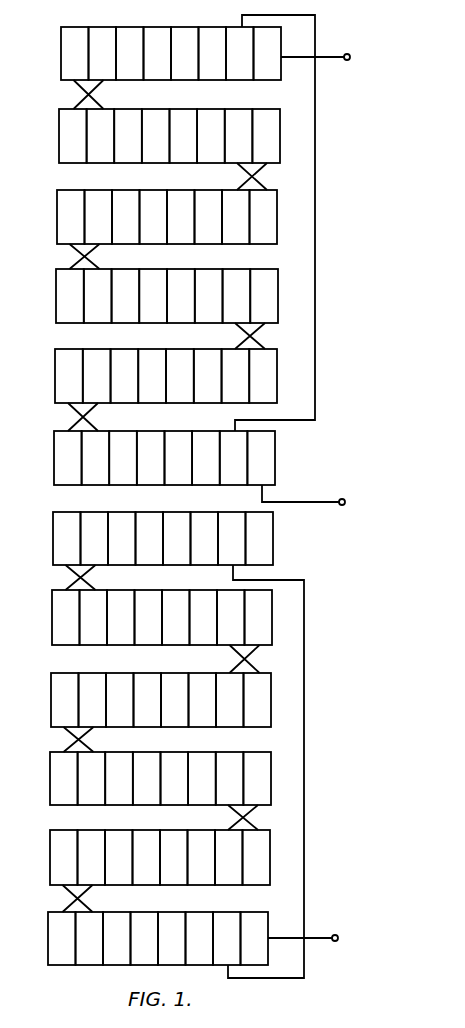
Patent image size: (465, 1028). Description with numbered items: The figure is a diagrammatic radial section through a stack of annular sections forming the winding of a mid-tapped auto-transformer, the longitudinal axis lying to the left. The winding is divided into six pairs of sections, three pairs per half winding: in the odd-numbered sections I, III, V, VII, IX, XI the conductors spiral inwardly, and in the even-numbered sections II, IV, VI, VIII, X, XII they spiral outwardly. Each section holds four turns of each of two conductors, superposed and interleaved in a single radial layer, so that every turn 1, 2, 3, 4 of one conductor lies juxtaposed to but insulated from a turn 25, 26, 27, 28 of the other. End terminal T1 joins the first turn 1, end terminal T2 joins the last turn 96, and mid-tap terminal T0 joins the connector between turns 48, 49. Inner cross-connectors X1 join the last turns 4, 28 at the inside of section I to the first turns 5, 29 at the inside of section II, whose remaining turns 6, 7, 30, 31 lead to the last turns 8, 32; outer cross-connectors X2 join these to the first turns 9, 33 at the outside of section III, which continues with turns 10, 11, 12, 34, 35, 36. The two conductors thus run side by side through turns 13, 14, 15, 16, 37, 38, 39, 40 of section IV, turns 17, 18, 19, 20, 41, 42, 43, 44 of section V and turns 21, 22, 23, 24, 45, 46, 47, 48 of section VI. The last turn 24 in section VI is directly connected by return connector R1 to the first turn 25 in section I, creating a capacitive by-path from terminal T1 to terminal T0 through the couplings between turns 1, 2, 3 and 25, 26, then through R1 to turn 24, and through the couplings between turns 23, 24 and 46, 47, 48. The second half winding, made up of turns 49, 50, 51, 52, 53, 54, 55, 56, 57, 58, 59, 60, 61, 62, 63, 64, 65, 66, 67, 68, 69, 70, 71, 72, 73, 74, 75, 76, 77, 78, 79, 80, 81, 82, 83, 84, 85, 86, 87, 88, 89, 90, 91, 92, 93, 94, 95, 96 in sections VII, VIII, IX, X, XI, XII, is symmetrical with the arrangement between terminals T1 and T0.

The first section I is at (160, 53).
The second section II is at (155, 136).
The first section of the second pair of sections III is at (151, 217).
The even-numbered section IV is at (150, 296).
The odd-numbered section V is at (154, 376).
The second section of the last pair of sections VI is at (150, 458).
The annular section VII is at (163, 538).
The annular section VIII is at (162, 617).
The annular section IX is at (161, 700).
The annular section X is at (146, 778).
The annular section XI is at (141, 857).
The annular section XII is at (138, 938).
The inner cross-connectors X1 is at (78, 87).
The outer cross-connectors X2 is at (260, 185).
The return connector R1 is at (312, 237).
The end terminal T1 is at (329, 58).
The mid-tap terminal T0 is at (315, 504).
The end terminal T2 is at (316, 939).
The first turn 1 is at (268, 53).
The turn 2 is at (213, 53).
The turn 3 is at (158, 53).
The last turn 4 is at (103, 53).
The first turn 5 is at (73, 136).
The turn 6 is at (128, 136).
The turn 7 is at (184, 136).
The last turn 8 is at (239, 136).
The first turn 9 is at (264, 217).
The turn 10 is at (209, 217).
The turn 11 is at (154, 217).
The turn 12 is at (99, 217).
The turn 13 is at (70, 296).
The turn 14 is at (126, 296).
The turn 15 is at (181, 296).
The turn 16 is at (237, 296).
The turn 17 is at (263, 376).
The turn 18 is at (208, 376).
The turn 19 is at (152, 376).
The turn 20 is at (97, 376).
The turn 21 is at (68, 458).
The turn 22 is at (123, 458).
The turn 23 is at (179, 458).
The last turn 24 is at (234, 458).
The first turn 25 is at (240, 53).
The turn 26 is at (185, 53).
The turn 27 is at (130, 53).
The last turn 28 is at (75, 53).
The first turn 29 is at (101, 136).
The turn 30 is at (156, 136).
The turn 31 is at (211, 136).
The last turn 32 is at (266, 136).
The first turn 33 is at (236, 217).
The turn 34 is at (181, 217).
The turn 35 is at (126, 217).
The turn 36 is at (71, 217).
The turn 37 is at (98, 296).
The turn 38 is at (153, 296).
The turn 39 is at (209, 296).
The turn 40 is at (264, 296).
The turn 41 is at (236, 376).
The turn 42 is at (180, 376).
The turn 43 is at (125, 376).
The turn 44 is at (69, 376).
The turn 45 is at (96, 458).
The turn 46 is at (151, 458).
The turn 47 is at (206, 458).
The turn 48 is at (261, 458).
The turn 49 is at (260, 538).
The turn 50 is at (205, 538).
The turn 51 is at (150, 538).
The turn 52 is at (95, 538).
The turn 53 is at (66, 617).
The turn 54 is at (121, 617).
The turn 55 is at (176, 617).
The turn 56 is at (231, 617).
The turn 57 is at (258, 700).
The turn 58 is at (203, 700).
The turn 59 is at (148, 700).
The turn 60 is at (93, 700).
The turn 61 is at (64, 778).
The turn 62 is at (119, 778).
The turn 63 is at (175, 778).
The turn 64 is at (230, 778).
The turn 65 is at (257, 857).
The turn 66 is at (202, 857).
The turn 67 is at (147, 857).
The turn 68 is at (92, 857).
The turn 69 is at (62, 938).
The turn 70 is at (117, 938).
The turn 71 is at (172, 938).
The turn 72 is at (227, 938).
The turn 73 is at (232, 538).
The turn 74 is at (177, 538).
The turn 75 is at (122, 538).
The turn 76 is at (67, 538).
The turn 77 is at (94, 617).
The turn 78 is at (149, 617).
The turn 79 is at (204, 617).
The turn 80 is at (259, 617).
The turn 81 is at (230, 700).
The turn 82 is at (175, 700).
The turn 83 is at (120, 700).
The turn 84 is at (65, 700).
The turn 85 is at (92, 778).
The turn 86 is at (147, 778).
The turn 87 is at (202, 778).
The turn 88 is at (257, 778).
The turn 89 is at (229, 857).
The turn 90 is at (174, 857).
The turn 91 is at (119, 857).
The turn 92 is at (64, 857).
The turn 93 is at (90, 938).
The turn 94 is at (145, 938).
The turn 95 is at (200, 938).
The last turn 96 is at (255, 938).